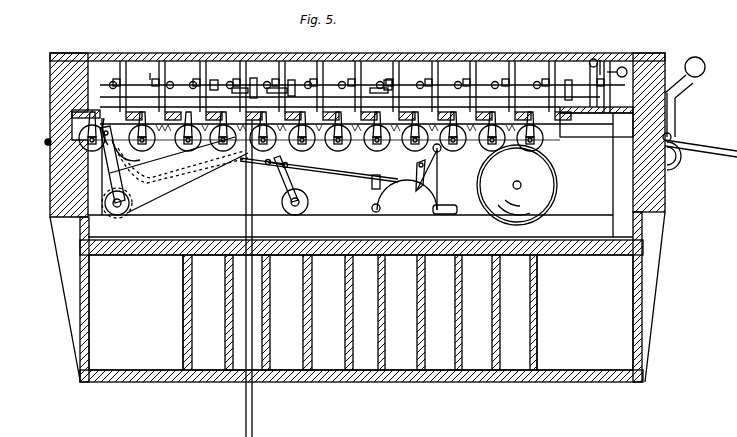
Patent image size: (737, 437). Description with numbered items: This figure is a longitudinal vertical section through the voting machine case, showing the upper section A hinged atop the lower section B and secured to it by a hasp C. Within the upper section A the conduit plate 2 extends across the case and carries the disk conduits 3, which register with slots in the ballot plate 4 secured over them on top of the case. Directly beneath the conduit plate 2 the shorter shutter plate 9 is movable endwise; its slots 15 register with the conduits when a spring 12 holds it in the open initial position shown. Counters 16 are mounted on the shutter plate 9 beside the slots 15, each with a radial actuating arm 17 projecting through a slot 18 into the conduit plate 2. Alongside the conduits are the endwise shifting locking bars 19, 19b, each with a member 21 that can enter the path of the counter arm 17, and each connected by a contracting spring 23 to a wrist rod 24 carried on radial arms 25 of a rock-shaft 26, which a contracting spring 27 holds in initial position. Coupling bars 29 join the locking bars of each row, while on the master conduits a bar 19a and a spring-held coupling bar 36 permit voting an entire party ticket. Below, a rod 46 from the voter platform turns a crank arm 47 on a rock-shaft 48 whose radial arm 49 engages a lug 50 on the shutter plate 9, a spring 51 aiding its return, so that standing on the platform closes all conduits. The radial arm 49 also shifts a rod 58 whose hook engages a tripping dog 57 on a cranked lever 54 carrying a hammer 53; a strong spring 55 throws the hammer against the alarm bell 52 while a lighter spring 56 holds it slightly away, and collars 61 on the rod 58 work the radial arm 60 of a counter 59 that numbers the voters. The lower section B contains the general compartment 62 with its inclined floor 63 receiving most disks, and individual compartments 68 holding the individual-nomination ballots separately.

The conduit plate 2 is at (355, 217).
The conduits 3 is at (208, 70).
The ballot plate 4 is at (628, 53).
The shutter plate 9 is at (596, 121).
The spring 12 is at (352, 143).
The slots 15 is at (548, 128).
The counters 16 is at (495, 151).
The radial actuating arm 17 is at (378, 95).
The slot 18 is at (150, 112).
The locking bar 19 is at (352, 82).
The bar 19a is at (600, 60).
The locking bar 19b is at (150, 73).
The member 21 is at (468, 88).
The contracting spring 23 is at (388, 80).
The wrist rod 24 is at (257, 78).
The radial arms 25 is at (568, 79).
The rock-shaft 26 is at (271, 95).
The contracting spring 27 is at (235, 96).
The coupling bar 29 is at (402, 72).
The coupling bar 36 is at (621, 66).
The rod 46 is at (246, 411).
The crank arm 47 is at (218, 172).
The rock-shaft 48 is at (120, 210).
The radial arm 49 is at (110, 188).
The lug 50 is at (115, 122).
The spring 51 is at (131, 153).
The alarm bell 52 is at (557, 186).
The hammer 53 is at (448, 215).
The cranked lever 54 is at (427, 171).
The strong spring 55 is at (404, 196).
The lighter spring 56 is at (439, 180).
The tripping dog 57 is at (416, 186).
The rod 58 is at (333, 172).
The counter 59 is at (303, 211).
The radial arm 60 is at (283, 186).
The pins or collars 61 is at (288, 165).
The general compartment 62 is at (136, 312).
The inclined floor 63 is at (214, 240).
The individual compartments 68 is at (408, 312).
The upper section A is at (52, 90).
The lower section B is at (112, 180).
The hasp C is at (680, 140).